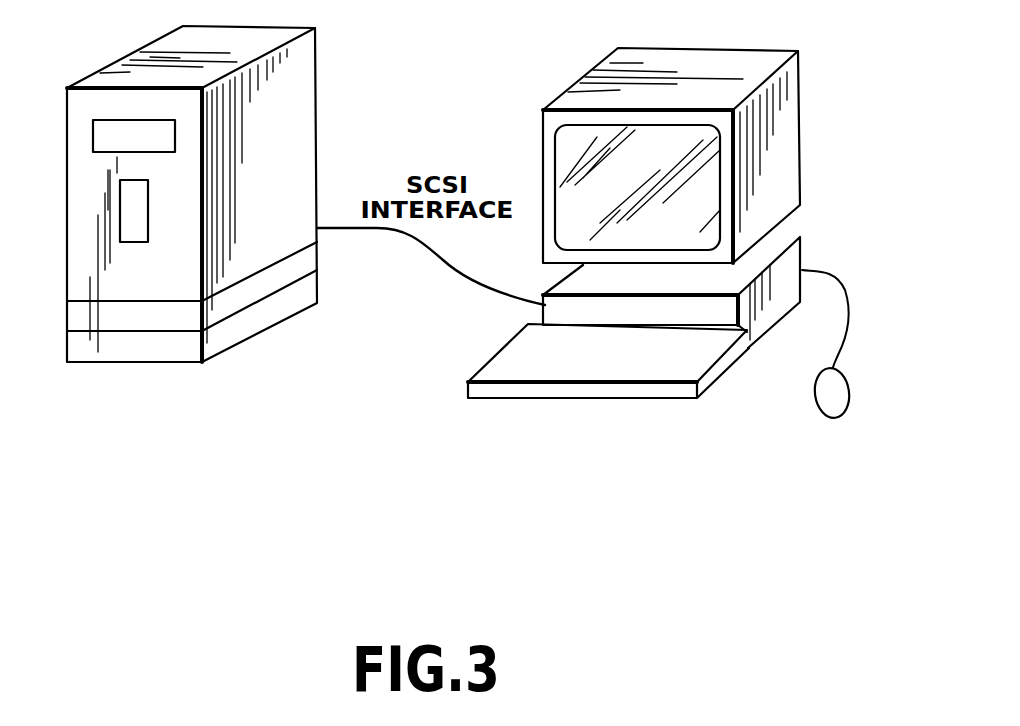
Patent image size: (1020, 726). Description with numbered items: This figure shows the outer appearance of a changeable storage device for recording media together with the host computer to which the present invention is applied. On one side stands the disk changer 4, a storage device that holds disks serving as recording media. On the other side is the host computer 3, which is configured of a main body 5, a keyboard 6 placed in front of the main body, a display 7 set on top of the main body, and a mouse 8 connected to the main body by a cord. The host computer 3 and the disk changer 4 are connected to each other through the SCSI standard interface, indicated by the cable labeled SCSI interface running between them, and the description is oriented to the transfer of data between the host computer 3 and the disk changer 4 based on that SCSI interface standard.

The host computer 3 is at (679, 307).
The disk changer 4 is at (165, 400).
The main body 5 is at (785, 268).
The keyboard 6 is at (702, 350).
The display 7 is at (787, 142).
The mouse 8 is at (833, 400).